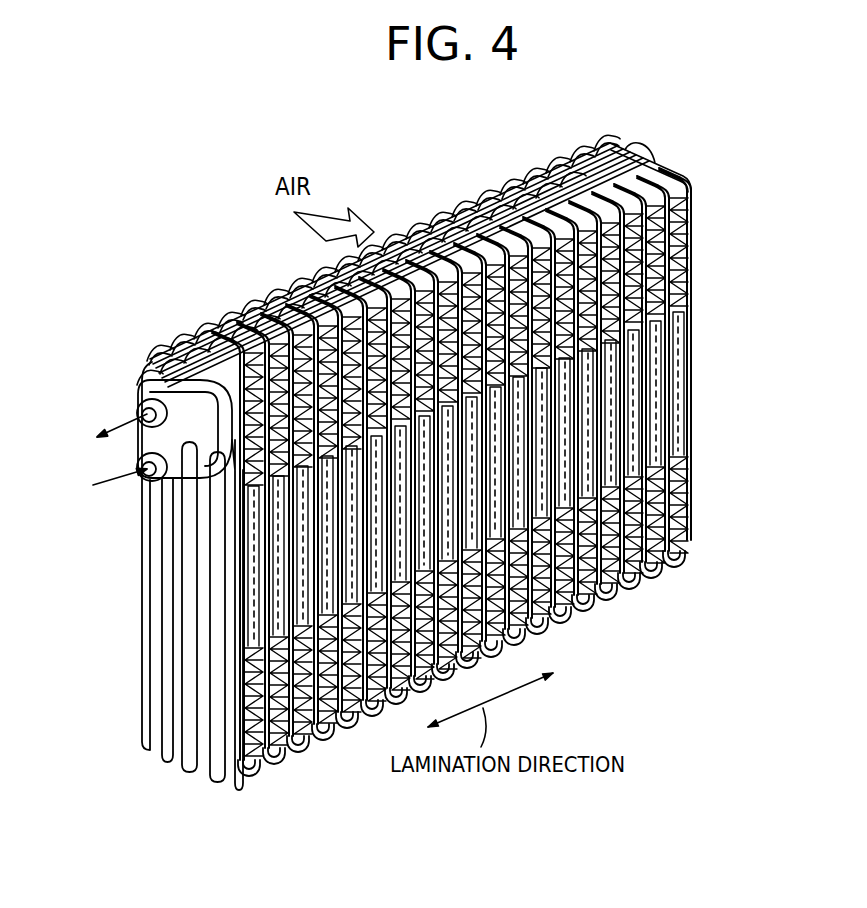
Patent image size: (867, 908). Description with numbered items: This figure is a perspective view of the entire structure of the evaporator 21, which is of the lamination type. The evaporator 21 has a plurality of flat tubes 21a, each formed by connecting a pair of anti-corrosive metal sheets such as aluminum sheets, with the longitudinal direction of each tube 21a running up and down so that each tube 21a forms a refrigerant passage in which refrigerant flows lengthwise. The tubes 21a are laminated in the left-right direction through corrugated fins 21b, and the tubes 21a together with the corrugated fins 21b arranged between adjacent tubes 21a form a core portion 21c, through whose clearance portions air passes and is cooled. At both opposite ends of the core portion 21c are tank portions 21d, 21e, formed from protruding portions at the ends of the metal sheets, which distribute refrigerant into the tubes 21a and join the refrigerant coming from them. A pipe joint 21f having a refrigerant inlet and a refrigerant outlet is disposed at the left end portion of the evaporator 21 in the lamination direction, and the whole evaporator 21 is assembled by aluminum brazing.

The evaporator 21 is at (650, 612).
The tube 21a is at (648, 314).
The corrugated fin 21b is at (673, 500).
The core portion 21c is at (650, 357).
The tank portion 21d is at (657, 158).
The tank portion 21e is at (690, 565).
The pipe joint 21f is at (112, 480).